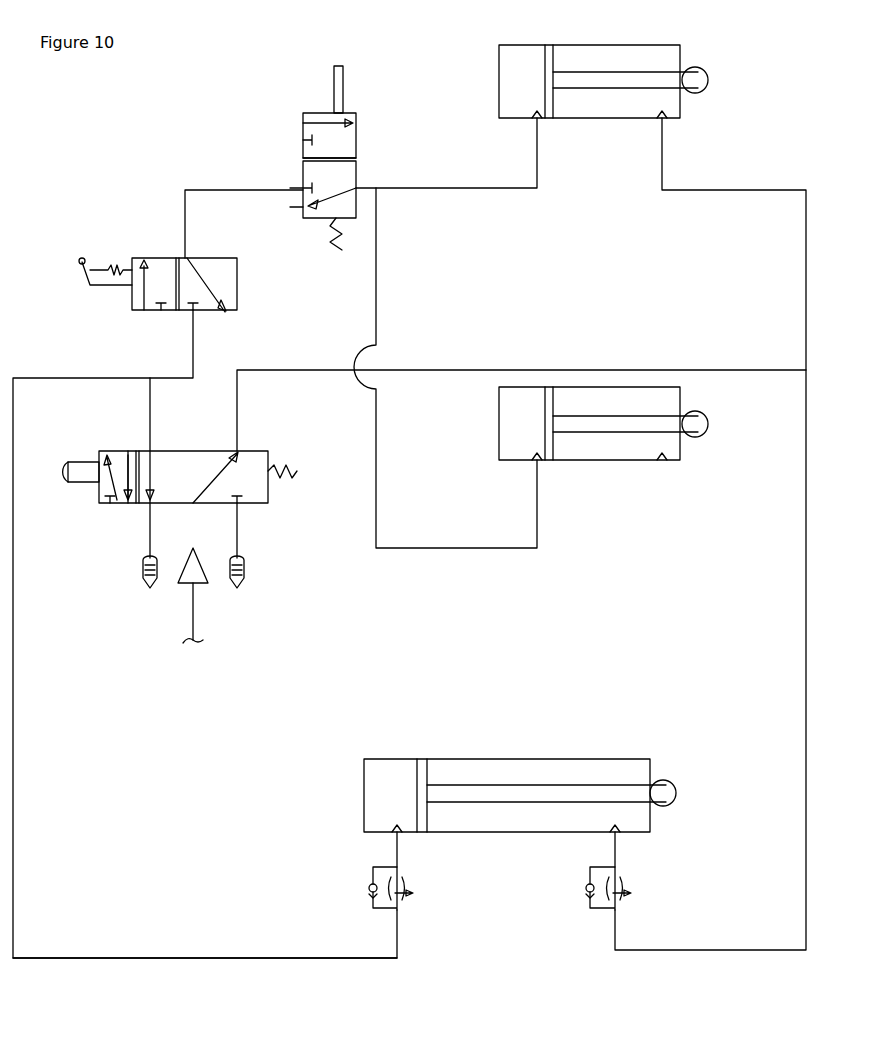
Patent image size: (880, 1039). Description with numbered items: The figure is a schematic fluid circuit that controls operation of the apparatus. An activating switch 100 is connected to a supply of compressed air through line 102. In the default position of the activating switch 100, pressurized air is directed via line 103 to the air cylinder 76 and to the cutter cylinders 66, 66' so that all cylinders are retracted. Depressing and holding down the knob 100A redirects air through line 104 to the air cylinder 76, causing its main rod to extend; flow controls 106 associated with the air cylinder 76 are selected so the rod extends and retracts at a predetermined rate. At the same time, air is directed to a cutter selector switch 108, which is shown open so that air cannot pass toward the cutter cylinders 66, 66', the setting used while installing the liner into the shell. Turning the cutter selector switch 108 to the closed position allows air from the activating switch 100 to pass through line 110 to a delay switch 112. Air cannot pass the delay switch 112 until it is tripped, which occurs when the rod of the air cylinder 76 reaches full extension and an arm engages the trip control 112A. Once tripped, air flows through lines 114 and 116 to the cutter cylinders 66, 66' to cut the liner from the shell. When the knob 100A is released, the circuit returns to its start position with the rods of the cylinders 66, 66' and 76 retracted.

The cutter cylinder 66 is at (603, 62).
The cutter cylinder 66' is at (603, 445).
The air cylinder 76 is at (492, 759).
The activating switch 100 is at (118, 503).
The knob 100A is at (65, 462).
The line 102 is at (193, 615).
The line 103 is at (515, 370).
The line 104 is at (328, 962).
The flow controls 106 is at (400, 888).
The cutter selector switch 108 is at (172, 258).
The line 110 is at (238, 190).
The delay switch 112 is at (357, 152).
The trip control 112A is at (338, 66).
The line 114 is at (416, 188).
The line 116 is at (376, 258).